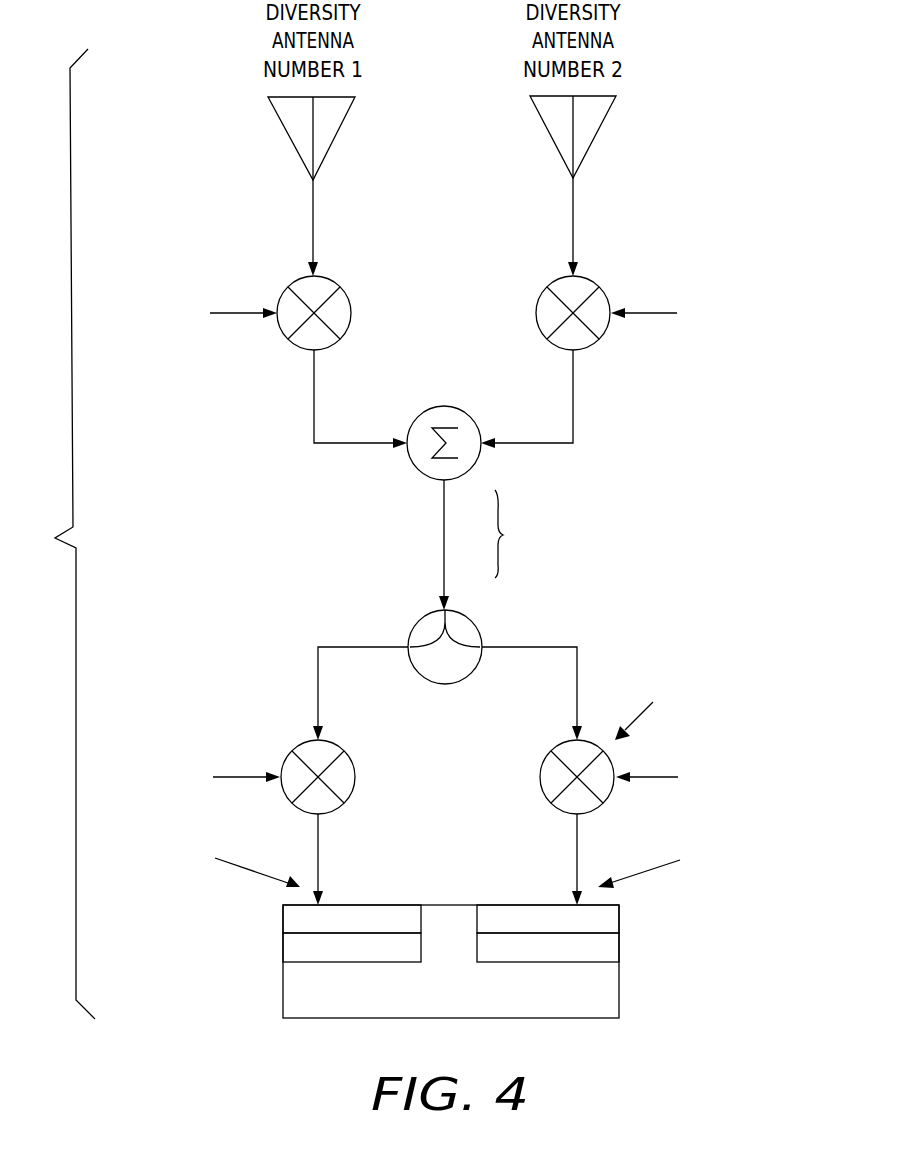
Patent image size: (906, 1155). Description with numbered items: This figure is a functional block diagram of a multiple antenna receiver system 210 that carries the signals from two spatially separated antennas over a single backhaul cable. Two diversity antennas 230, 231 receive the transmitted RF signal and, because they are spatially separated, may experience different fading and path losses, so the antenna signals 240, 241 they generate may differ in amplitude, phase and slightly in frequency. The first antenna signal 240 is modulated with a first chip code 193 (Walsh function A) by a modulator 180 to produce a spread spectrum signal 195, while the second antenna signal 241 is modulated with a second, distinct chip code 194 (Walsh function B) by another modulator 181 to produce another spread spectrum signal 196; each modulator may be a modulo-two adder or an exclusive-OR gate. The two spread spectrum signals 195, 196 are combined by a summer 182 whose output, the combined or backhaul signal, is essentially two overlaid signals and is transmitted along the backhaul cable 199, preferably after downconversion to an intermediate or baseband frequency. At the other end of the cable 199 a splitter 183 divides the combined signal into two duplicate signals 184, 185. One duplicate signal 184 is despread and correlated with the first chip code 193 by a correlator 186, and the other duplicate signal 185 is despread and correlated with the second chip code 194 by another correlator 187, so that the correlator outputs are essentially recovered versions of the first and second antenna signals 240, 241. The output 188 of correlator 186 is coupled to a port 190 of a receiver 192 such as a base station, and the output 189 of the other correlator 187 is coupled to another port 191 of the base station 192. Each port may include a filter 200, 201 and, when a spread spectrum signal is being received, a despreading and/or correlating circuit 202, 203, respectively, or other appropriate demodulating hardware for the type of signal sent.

The modulator 180 is at (279, 337).
The modulator 181 is at (536, 316).
The summer 182 is at (417, 471).
The splitter 183 is at (425, 681).
The duplicate signal 184 is at (340, 646).
The duplicate signal 185 is at (542, 645).
The correlator 186 is at (357, 790).
The correlator 187 is at (538, 793).
The correlator output 188 is at (322, 852).
The correlator output 189 is at (577, 853).
The port 190 is at (218, 875).
The port 191 is at (678, 875).
The receiver 192 is at (283, 995).
The first chip code 193 is at (194, 531).
The second chip code 194 is at (699, 529).
The spread spectrum signal 195 is at (335, 447).
The spread spectrum signal 196 is at (550, 448).
The backhaul cable 199 is at (443, 557).
The filter 200 is at (283, 920).
The filter 201 is at (620, 917).
The despreading and/or correlating circuit 202 is at (283, 952).
The despreading and/or correlating circuit 203 is at (620, 955).
The receiver system 210 is at (52, 534).
The antenna 230 is at (290, 143).
The antenna 231 is at (597, 150).
The antenna signal 240 is at (313, 222).
The antenna signal 241 is at (573, 222).